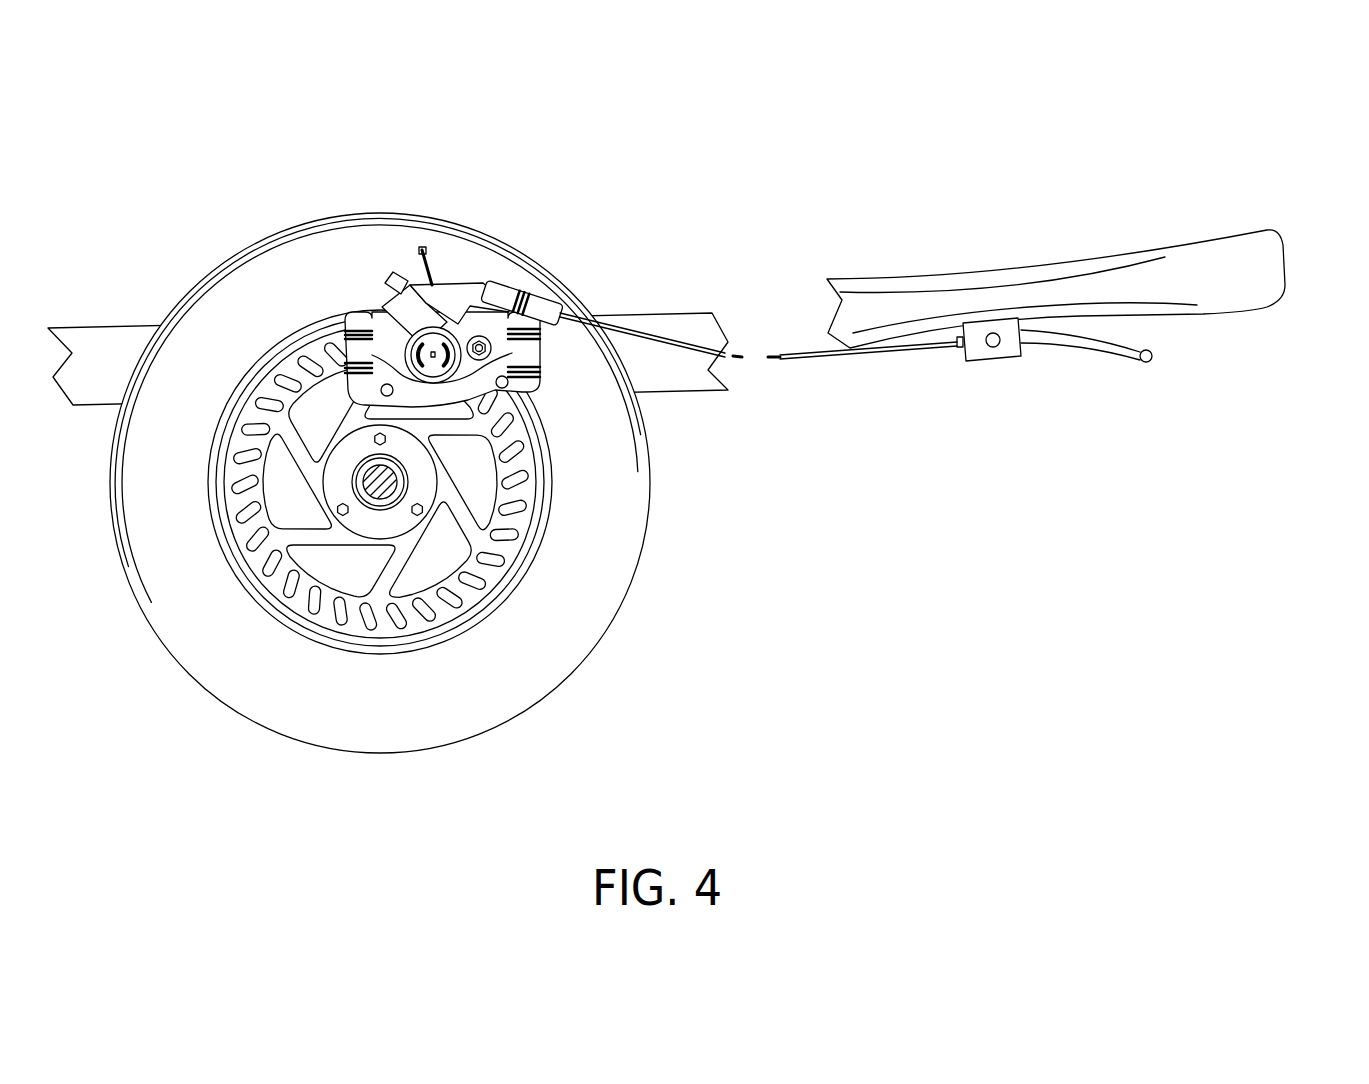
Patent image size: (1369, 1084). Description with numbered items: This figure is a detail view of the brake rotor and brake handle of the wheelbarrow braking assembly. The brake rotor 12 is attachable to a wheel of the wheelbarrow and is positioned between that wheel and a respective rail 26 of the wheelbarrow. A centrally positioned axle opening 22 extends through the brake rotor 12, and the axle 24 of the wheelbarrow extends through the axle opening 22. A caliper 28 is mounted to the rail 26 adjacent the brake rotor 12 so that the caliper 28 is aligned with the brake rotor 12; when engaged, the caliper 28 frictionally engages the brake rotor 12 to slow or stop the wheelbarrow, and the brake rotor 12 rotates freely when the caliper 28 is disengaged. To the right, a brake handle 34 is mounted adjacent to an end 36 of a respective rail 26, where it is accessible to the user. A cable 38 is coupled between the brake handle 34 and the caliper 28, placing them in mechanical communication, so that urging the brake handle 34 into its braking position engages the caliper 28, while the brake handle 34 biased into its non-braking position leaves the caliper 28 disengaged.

The brake rotor 12 is at (428, 625).
The axle opening 22 is at (397, 483).
The axle 24 is at (372, 477).
The rail 26 is at (697, 393).
The caliper 28 is at (447, 302).
The brake handle 34 is at (1098, 345).
The end 36 is at (1280, 265).
The cable 38 is at (911, 352).